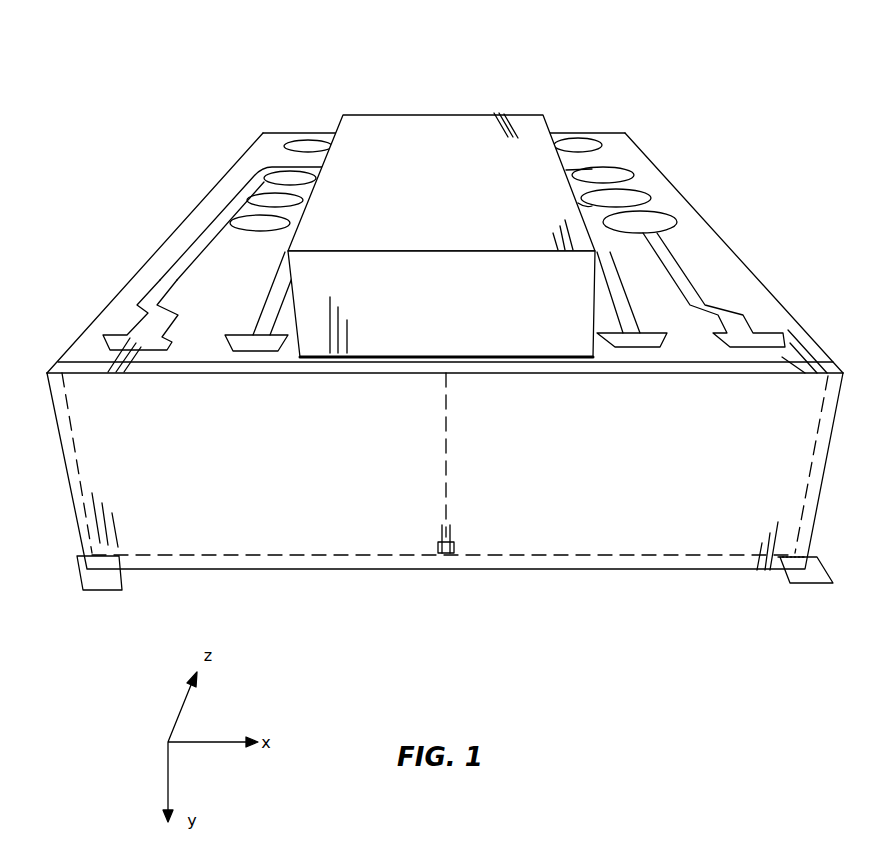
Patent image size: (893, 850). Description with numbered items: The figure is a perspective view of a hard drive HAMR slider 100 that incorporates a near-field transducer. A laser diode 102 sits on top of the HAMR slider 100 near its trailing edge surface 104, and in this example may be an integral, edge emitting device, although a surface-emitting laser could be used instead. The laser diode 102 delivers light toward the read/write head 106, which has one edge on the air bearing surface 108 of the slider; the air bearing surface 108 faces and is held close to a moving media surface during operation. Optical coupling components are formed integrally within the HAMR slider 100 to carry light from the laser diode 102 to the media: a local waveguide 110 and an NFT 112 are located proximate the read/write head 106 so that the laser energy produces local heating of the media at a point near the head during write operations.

The HAMR slider 100 is at (635, 81).
The laser diode 102 is at (357, 113).
The trailing edge surface 104 is at (107, 592).
The read/write head 106 is at (452, 553).
The air bearing surface 108 is at (822, 583).
The waveguide 110 is at (446, 442).
The NFT 112 is at (444, 555).